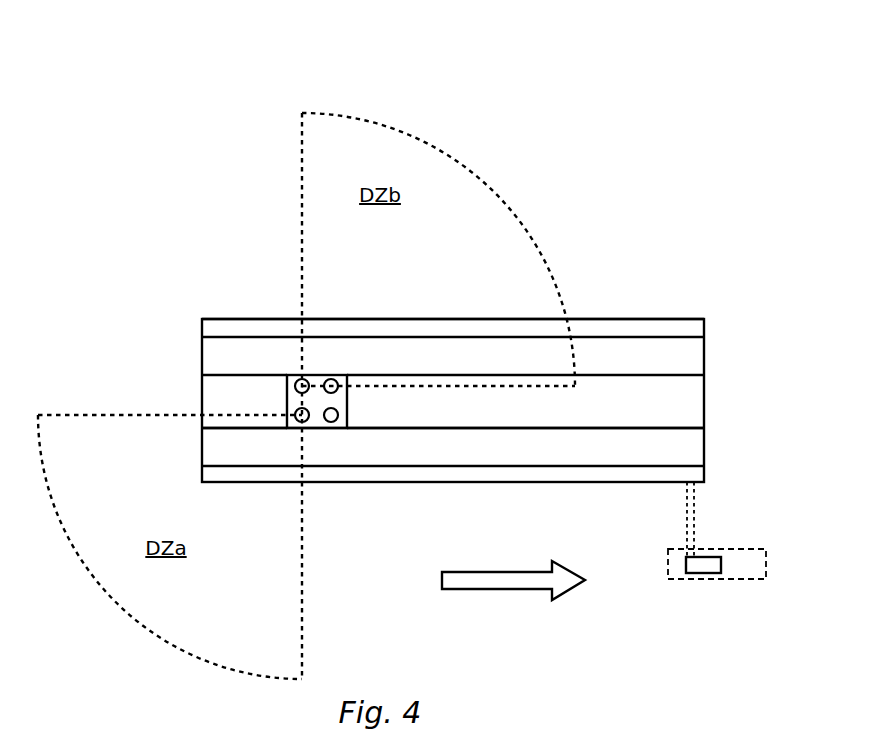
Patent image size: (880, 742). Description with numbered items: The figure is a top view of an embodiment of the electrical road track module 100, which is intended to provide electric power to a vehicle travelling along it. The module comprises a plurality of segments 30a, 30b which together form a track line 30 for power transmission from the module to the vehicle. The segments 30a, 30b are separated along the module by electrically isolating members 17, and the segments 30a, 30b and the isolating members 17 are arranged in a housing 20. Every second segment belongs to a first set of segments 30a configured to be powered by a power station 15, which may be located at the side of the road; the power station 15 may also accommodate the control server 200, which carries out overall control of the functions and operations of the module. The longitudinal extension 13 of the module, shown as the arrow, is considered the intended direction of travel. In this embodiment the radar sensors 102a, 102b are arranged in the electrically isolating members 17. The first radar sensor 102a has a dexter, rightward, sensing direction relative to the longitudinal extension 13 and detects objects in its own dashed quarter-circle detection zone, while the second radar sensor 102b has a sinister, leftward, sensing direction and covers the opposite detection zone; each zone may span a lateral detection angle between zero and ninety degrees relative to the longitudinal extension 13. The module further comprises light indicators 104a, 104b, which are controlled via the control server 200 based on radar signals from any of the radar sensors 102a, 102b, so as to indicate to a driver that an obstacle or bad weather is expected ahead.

The electrical road track module 100 is at (216, 112).
The housing 20 is at (280, 328).
The electrically isolating member 17 is at (296, 376).
The track line 30 is at (536, 448).
The first set of segments 30a is at (397, 410).
The segment 30b is at (205, 380).
The first radar sensor 102a is at (295, 406).
The second radar sensor 102b is at (298, 380).
The light indicator 104a is at (331, 422).
The light indicator 104b is at (333, 378).
The longitudinal extension 13 is at (500, 580).
The control server 200 is at (692, 575).
The power station 15 is at (757, 567).